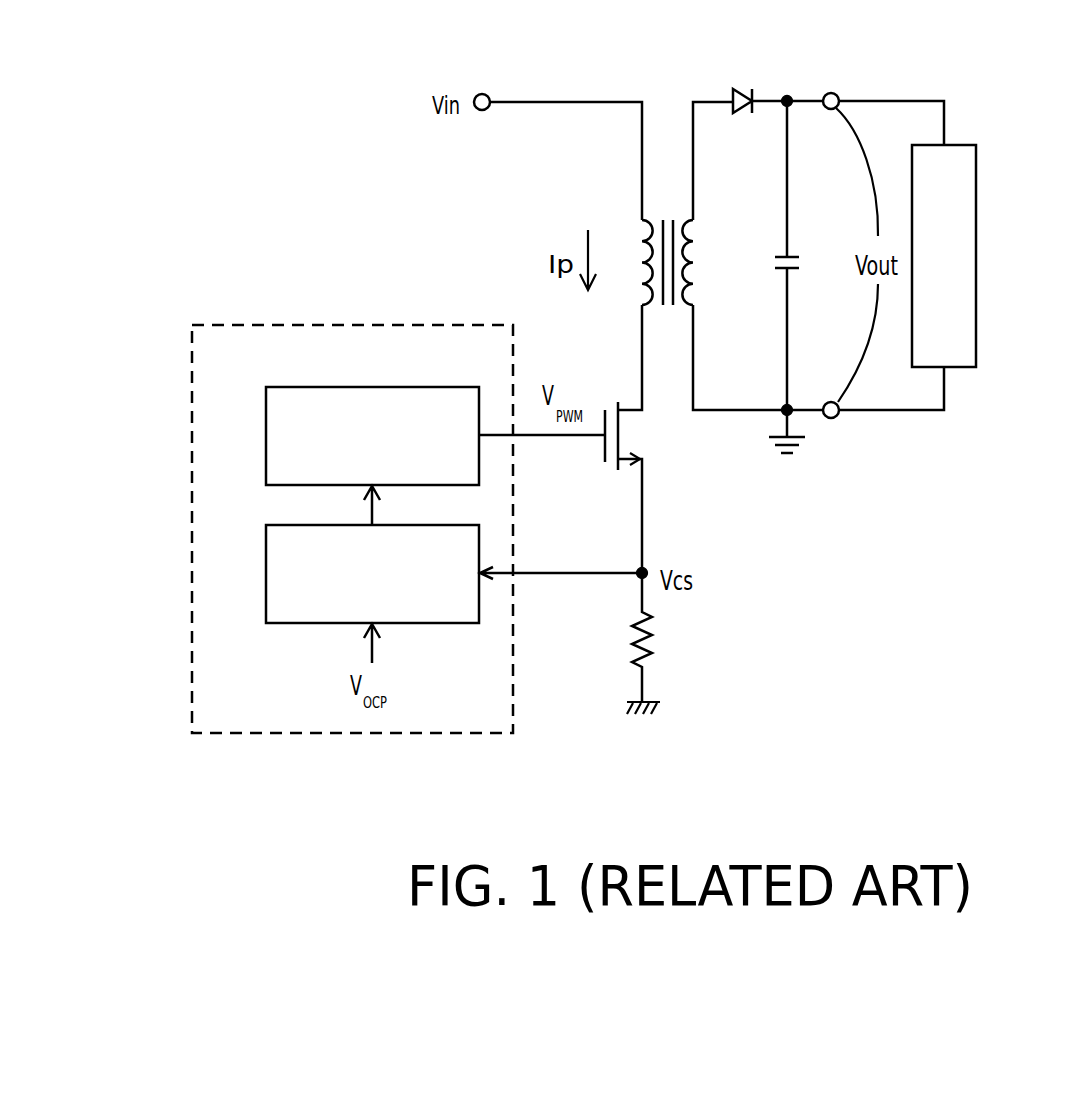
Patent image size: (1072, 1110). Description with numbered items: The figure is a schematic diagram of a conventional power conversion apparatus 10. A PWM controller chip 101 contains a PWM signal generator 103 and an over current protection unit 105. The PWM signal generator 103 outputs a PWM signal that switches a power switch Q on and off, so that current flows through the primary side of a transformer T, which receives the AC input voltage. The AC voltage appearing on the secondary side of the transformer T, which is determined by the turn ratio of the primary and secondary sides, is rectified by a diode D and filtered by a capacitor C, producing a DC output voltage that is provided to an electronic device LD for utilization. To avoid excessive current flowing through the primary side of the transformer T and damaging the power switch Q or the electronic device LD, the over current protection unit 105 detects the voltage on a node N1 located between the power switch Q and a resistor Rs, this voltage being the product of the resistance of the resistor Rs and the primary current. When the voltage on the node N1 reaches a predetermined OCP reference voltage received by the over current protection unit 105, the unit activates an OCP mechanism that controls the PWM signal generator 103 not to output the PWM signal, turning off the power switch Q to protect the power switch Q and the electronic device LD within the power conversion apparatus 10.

The power conversion apparatus 10 is at (985, 751).
The PWM controller chip 101 is at (322, 322).
The PWM signal generator 103 is at (322, 387).
The over current protection (OCP) unit 105 is at (322, 623).
The transformer T is at (670, 136).
The diode D is at (778, 84).
The capacitor C is at (799, 255).
The electronic device LD is at (976, 290).
The power switch Q is at (568, 439).
The node N1 is at (640, 568).
The resistor Rs is at (658, 637).